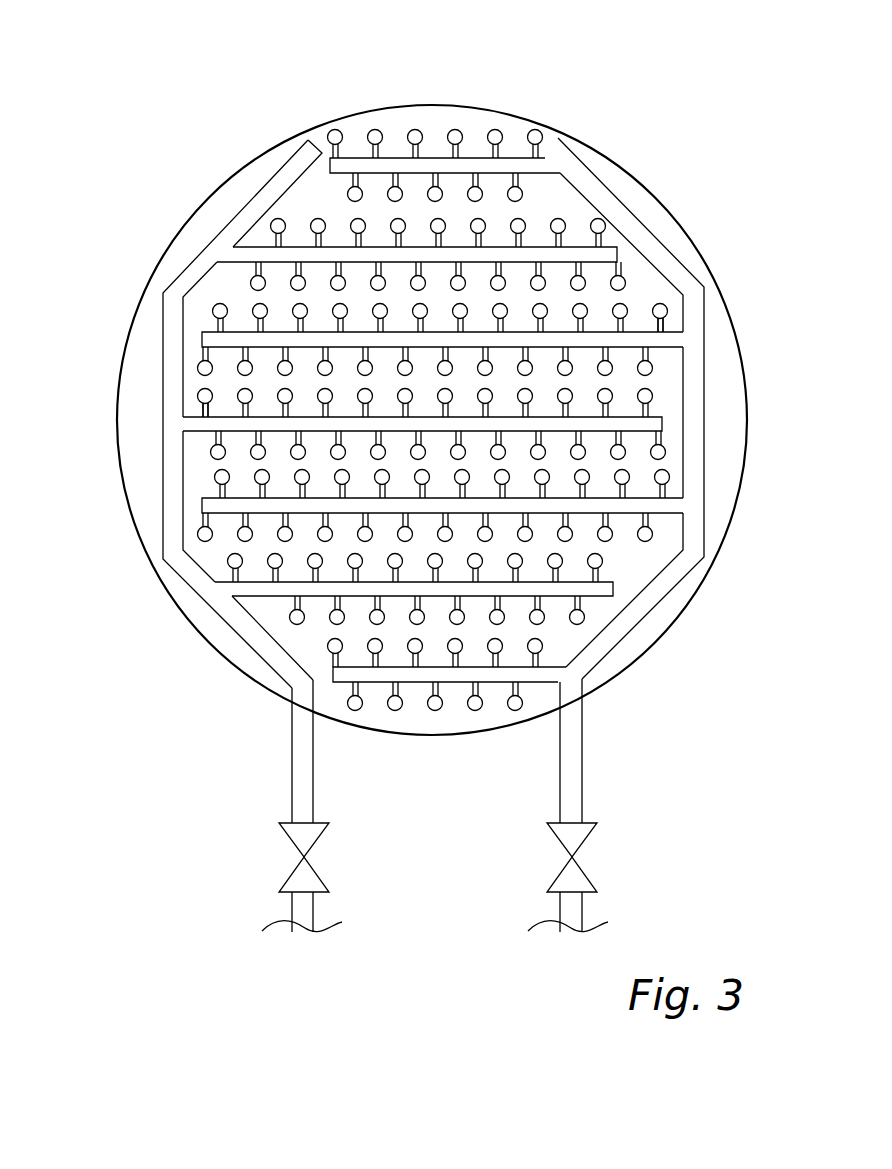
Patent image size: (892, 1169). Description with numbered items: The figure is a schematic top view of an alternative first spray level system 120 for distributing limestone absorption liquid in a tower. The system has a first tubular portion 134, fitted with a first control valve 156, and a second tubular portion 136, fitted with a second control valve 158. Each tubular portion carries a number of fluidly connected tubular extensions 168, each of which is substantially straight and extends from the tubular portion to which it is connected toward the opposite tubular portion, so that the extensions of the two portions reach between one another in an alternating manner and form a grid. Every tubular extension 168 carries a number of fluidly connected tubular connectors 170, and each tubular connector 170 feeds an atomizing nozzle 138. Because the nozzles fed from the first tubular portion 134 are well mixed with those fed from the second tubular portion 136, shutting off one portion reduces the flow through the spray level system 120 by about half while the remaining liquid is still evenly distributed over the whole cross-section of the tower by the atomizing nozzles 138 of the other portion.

The first spray level system 120 is at (435, 145).
The tubular extension 168 is at (362, 160).
The atomizing nozzle 138 is at (664, 305).
The tubular connector 170 is at (667, 320).
The second tubular portion 136 is at (313, 762).
The first tubular portion 134 is at (583, 762).
The second control valve 158 is at (317, 845).
The first control valve 156 is at (588, 845).